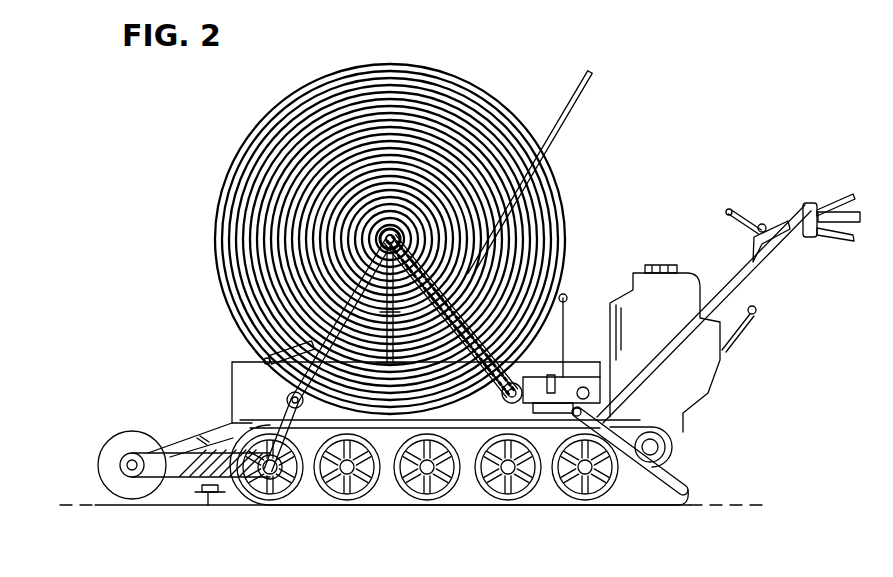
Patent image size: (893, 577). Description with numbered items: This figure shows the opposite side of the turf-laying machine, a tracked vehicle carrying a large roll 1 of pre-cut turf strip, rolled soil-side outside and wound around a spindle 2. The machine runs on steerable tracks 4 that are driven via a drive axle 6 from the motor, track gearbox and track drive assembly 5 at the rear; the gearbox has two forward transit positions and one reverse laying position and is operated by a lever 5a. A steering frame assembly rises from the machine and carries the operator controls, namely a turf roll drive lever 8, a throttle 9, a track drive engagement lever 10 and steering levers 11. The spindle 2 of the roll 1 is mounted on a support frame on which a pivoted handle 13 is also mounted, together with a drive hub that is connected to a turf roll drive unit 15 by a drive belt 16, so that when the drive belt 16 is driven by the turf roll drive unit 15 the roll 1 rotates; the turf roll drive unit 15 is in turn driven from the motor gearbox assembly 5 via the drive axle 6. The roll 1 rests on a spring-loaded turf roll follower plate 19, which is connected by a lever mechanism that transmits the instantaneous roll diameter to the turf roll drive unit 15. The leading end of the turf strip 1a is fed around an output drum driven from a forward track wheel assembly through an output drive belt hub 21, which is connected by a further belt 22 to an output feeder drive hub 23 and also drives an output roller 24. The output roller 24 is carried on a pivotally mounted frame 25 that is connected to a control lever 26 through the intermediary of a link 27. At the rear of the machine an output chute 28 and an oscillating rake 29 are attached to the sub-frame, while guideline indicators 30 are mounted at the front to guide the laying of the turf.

The roll 1 is at (368, 62).
The leading end of the turf strip 1a is at (92, 500).
The spindle 2 is at (390, 228).
The steerable tracks 4 is at (530, 503).
The motor, track gearbox and track drive assembly 5 is at (695, 383).
The lever 5a is at (756, 314).
The drive axle 6 is at (668, 448).
The turf roll drive lever 8 is at (730, 212).
The throttle 9 is at (762, 223).
The track drive engagement lever 10 is at (850, 195).
The steering levers 11 is at (838, 240).
The pivoted handle 13 is at (278, 355).
The turf roll drive unit 15 is at (590, 370).
The drive belt 16 is at (470, 270).
The turf roll follower plate 19 is at (462, 420).
The output drive belt hub 21 is at (283, 505).
The belt 22 is at (180, 457).
The output feeder drive hub 23 is at (262, 378).
The output roller 24 is at (115, 440).
The pivotally mounted frame 25 is at (232, 385).
The control lever 26 is at (583, 387).
The link 27 is at (380, 372).
The output chute 28 is at (188, 490).
The oscillating rake 29 is at (210, 494).
The guideline indicators 30 is at (630, 455).